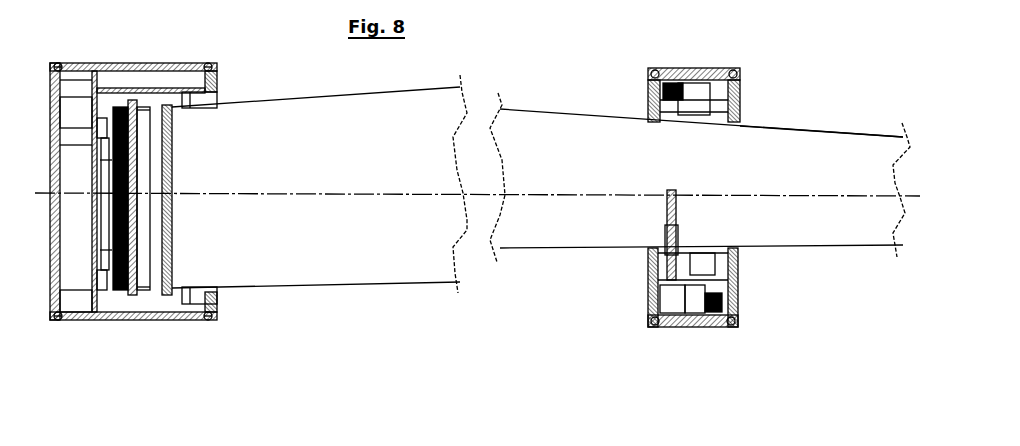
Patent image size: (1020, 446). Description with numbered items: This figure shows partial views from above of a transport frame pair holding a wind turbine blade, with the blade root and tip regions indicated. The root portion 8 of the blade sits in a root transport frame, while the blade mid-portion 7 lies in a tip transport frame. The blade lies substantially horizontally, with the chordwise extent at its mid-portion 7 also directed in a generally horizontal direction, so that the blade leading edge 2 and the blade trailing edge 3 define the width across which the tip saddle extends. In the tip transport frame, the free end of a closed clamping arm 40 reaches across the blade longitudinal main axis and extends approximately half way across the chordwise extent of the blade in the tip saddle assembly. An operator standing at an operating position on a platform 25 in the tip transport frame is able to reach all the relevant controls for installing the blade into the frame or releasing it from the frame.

The blade leading edge 2 is at (590, 248).
The blade trailing edge 3 is at (865, 131).
The blade mid-portion 7 is at (800, 207).
The root portion 8 is at (212, 225).
The platform 25 is at (692, 293).
The closed clamping arm 40 is at (672, 193).